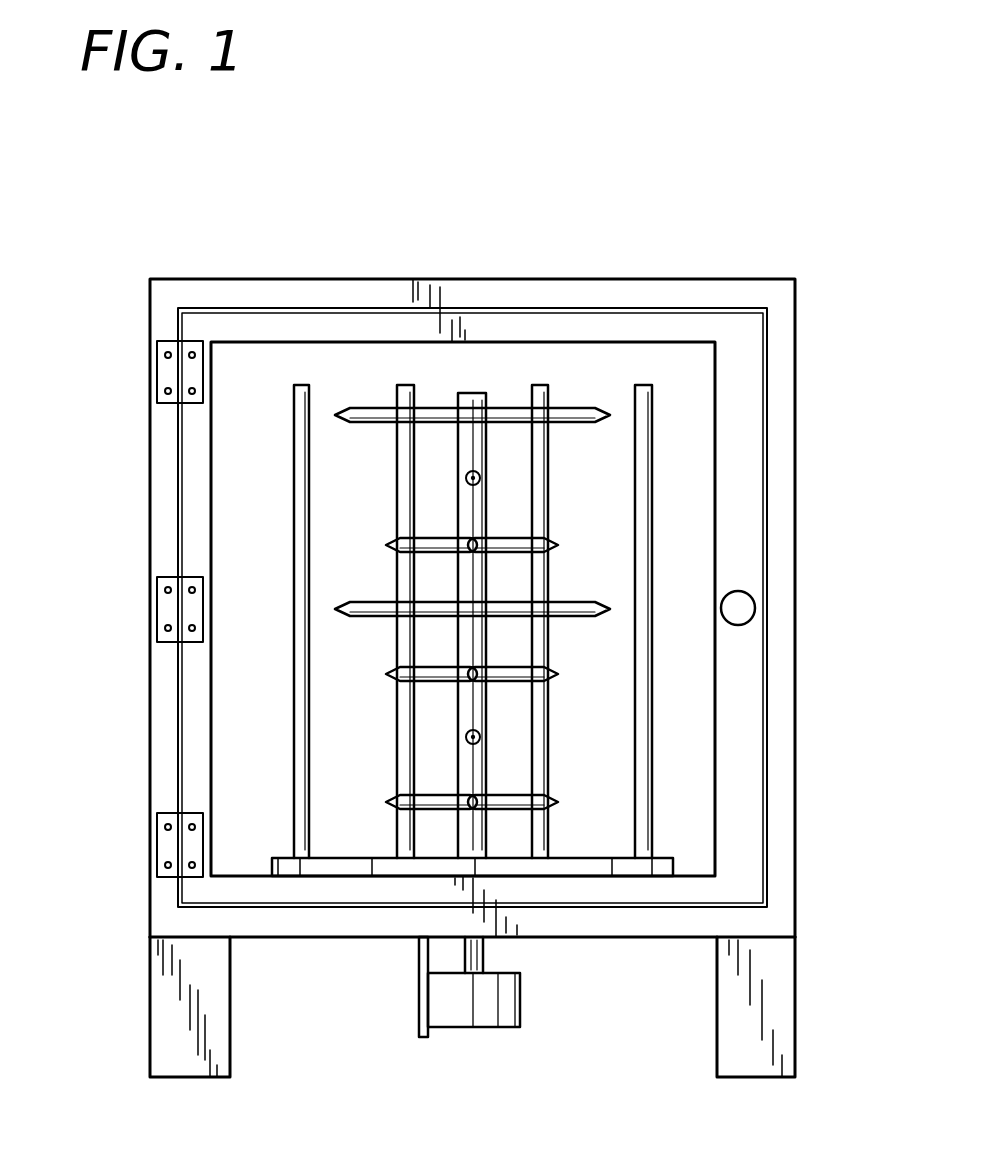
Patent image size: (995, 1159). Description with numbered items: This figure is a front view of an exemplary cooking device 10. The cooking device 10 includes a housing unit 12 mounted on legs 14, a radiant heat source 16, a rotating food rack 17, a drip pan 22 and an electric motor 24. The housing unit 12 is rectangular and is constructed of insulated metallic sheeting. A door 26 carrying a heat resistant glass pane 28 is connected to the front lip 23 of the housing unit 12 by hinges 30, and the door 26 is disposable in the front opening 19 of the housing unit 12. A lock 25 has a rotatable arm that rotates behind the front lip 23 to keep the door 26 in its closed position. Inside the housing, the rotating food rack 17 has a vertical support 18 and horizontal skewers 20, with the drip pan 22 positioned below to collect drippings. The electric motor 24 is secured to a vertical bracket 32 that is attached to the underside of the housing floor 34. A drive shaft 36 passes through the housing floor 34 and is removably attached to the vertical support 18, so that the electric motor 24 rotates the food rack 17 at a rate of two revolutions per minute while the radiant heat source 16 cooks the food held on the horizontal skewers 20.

The cooking device 10 is at (769, 226).
The housing unit 12 is at (150, 305).
The legs 14 is at (150, 1005).
The radiant heat source 16 is at (407, 385).
The rotating food rack 17 is at (468, 383).
The vertical support 18 is at (487, 777).
The front opening 19 is at (783, 345).
The horizontal skewers 20 is at (552, 535).
The drip pan 22 is at (322, 857).
The front lip 23 is at (165, 707).
The electric motor 24 is at (522, 1000).
The lock 25 is at (742, 606).
The door 26 is at (193, 778).
The heat resistant glass pane 28 is at (258, 459).
The hinges 30 is at (157, 375).
The vertical bracket 32 is at (418, 1002).
The housing floor 34 is at (327, 940).
The drive shaft 36 is at (483, 952).